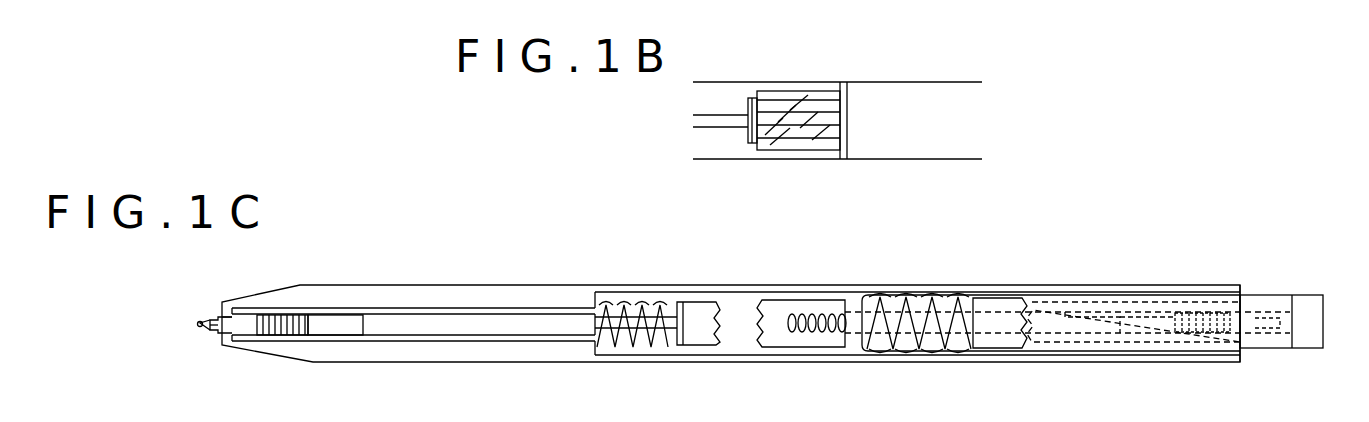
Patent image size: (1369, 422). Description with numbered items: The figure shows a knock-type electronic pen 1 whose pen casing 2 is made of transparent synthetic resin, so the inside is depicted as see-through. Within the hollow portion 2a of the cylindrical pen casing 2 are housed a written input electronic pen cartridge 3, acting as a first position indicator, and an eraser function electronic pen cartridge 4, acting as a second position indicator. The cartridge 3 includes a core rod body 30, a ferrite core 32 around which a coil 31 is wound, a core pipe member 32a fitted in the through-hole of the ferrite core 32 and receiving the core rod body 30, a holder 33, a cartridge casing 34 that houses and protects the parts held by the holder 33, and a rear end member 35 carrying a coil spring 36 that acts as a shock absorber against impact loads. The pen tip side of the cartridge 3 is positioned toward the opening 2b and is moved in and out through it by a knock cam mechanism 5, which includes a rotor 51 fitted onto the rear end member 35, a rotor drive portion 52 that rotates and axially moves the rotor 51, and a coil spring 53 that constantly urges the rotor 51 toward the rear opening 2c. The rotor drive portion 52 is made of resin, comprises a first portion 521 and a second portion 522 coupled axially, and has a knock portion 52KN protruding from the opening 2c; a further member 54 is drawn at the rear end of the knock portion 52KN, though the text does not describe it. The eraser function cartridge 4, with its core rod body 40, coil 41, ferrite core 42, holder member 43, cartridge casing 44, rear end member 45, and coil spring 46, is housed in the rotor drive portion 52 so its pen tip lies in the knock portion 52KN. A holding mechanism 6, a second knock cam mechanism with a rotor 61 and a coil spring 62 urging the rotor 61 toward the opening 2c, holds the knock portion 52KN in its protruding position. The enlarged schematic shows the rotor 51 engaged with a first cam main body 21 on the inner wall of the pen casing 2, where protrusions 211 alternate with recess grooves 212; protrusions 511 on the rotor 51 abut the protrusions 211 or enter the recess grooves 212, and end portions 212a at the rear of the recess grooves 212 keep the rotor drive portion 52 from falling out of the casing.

In FIG. 1C, the knock-type electronic pen 1 is at (478, 242).
In FIG. 1C, the pen casing 2 is at (713, 294).
In FIG. 1B, the hollow portion 2a is at (950, 90).
In FIG. 1C, the hollow portion 2a is at (610, 297).
In FIG. 1C, the opening 2b is at (217, 317).
In FIG. 1C, the opening 2c is at (1240, 292).
In FIG. 1C, the electronic pen cartridge 3 is at (397, 326).
In FIG. 1C, the core rod body 30 is at (200, 328).
In FIG. 1C, the coil 31 is at (268, 315).
In FIG. 1C, the ferrite core 32 is at (236, 321).
In FIG. 1C, the core pipe member 32a is at (210, 330).
In FIG. 1C, the holder 33 is at (318, 317).
In FIG. 1C, the cartridge casing 34 is at (465, 332).
In FIG. 1B, the rear end member 35 is at (703, 120).
In FIG. 1C, the rear end member 35 is at (658, 330).
In FIG. 1C, the coil spring 36 is at (615, 337).
In FIG. 1C, the electronic pen cartridge 4 is at (1067, 329).
In FIG. 1C, the core rod body 40 is at (1290, 313).
In FIG. 1C, the coil 41 is at (1208, 334).
In FIG. 1C, the ferrite core 42 is at (1257, 334).
In FIG. 1C, the holder member 43 is at (1150, 335).
In FIG. 1C, the cartridge casing 44 is at (1087, 334).
In FIG. 1C, the rear end member 45 is at (830, 332).
In FIG. 1C, the coil spring 46 is at (797, 332).
In FIG. 1C, the knock cam mechanism 5 is at (801, 311).
In FIG. 1B, the rotor 51 is at (831, 100).
In FIG. 1C, the rotor 51 is at (703, 310).
In FIG. 1B, the protrusions 511 is at (780, 112).
In FIG. 1C, the rotor drive portion 52 is at (1031, 314).
In FIG. 1C, the first portion 521 is at (822, 308).
In FIG. 1C, the second portion 522 is at (1070, 292).
In FIG. 1C, the knock portion 52KN is at (1280, 336).
In FIG. 1C, the coil spring 53 is at (640, 305).
In FIG. 1C, the knock cap 54 is at (1305, 300).
In FIG. 1B, the holding mechanism 6 is at (960, 6).
In FIG. 1C, the holding mechanism 6 is at (947, 358).
In FIG. 1C, the rotor 61 is at (1003, 342).
In FIG. 1C, the coil spring 62 is at (923, 342).
In FIG. 1B, the first cam main body 21 is at (836, 69).
In FIG. 1C, the first cam main body 21 is at (781, 416).
In FIG. 1B, the protrusions 211 is at (818, 110).
In FIG. 1B, the recess grooves 212 is at (847, 128).
In FIG. 1B, the end portions 212a is at (840, 132).